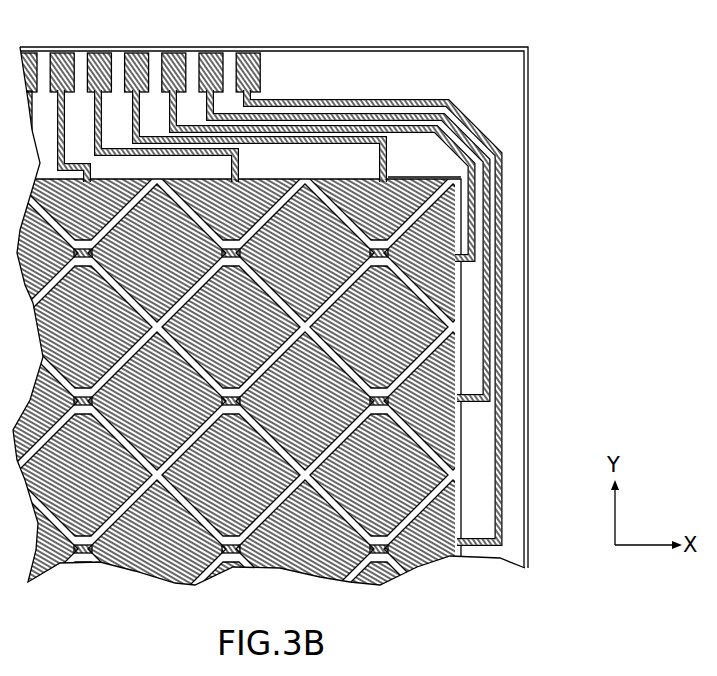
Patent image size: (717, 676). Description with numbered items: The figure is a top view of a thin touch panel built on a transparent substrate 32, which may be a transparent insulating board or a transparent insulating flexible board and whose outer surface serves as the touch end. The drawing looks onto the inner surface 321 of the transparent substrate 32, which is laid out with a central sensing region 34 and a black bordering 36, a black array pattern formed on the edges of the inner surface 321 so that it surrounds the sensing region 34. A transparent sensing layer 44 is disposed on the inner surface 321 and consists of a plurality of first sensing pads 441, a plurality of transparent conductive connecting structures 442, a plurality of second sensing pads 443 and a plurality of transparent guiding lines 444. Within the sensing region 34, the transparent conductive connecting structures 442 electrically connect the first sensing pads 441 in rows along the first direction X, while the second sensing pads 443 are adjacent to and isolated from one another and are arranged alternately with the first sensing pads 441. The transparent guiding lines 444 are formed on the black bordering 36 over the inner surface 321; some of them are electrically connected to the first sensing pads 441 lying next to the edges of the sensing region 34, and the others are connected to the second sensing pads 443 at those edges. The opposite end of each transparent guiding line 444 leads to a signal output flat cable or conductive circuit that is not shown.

The transparent substrate 32 is at (108, 45).
The inner surface 321 is at (390, 585).
The sensing region 34 is at (363, 583).
The black bordering 36 is at (512, 528).
The transparent sensing layer 44 is at (326, 383).
The first sensing pads 441 is at (443, 232).
The transparent conductive connecting structures 442 is at (378, 256).
The second sensing pads 443 is at (393, 203).
The transparent guiding lines 444 is at (498, 392).